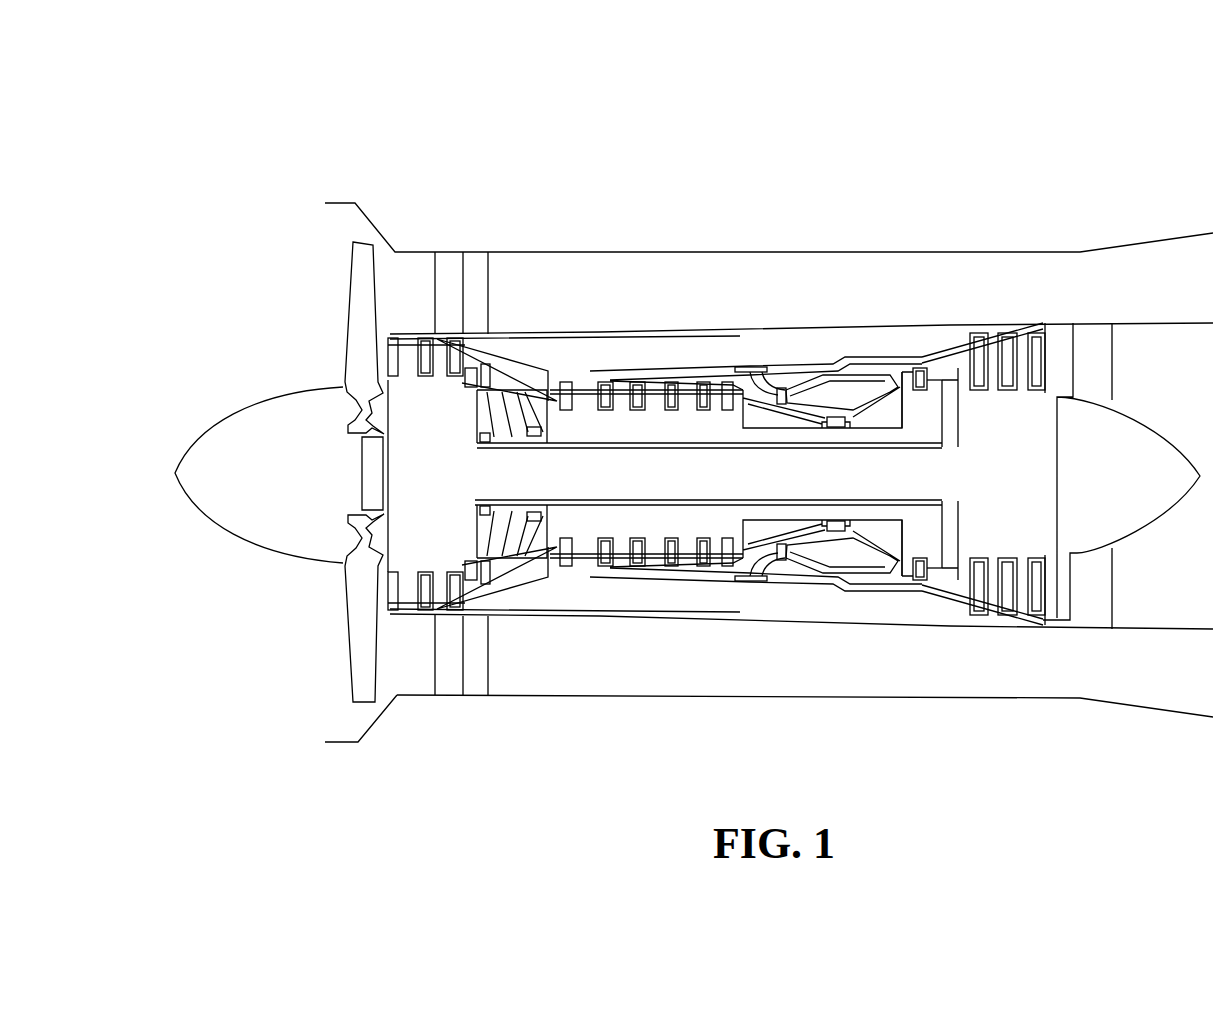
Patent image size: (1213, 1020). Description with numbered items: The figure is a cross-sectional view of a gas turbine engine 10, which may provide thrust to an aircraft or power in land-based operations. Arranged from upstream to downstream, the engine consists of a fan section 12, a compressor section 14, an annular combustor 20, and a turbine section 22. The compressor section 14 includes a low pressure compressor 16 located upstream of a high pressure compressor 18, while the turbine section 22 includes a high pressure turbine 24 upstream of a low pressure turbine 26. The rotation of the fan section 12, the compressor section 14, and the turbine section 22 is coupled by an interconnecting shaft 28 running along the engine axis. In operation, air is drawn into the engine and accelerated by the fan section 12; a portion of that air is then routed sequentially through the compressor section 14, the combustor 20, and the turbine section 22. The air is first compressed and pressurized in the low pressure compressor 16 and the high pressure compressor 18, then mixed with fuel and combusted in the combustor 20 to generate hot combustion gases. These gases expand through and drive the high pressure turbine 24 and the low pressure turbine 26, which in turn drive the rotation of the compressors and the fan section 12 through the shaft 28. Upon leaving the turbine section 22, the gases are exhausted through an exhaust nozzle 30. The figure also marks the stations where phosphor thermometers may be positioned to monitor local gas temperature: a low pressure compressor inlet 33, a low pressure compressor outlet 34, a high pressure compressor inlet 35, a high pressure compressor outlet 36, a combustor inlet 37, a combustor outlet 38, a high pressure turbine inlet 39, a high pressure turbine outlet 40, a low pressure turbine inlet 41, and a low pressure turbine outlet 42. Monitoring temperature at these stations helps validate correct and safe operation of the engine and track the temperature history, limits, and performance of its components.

The gas turbine engine 10 is at (927, 153).
The fan section 12 is at (365, 652).
The compressor section 14 is at (528, 350).
The low pressure compressor 16 is at (443, 603).
The high pressure compressor 18 is at (687, 552).
The annular combustor 20 is at (835, 393).
The turbine section 22 is at (999, 313).
The high pressure turbine 24 is at (935, 580).
The low pressure turbine 26 is at (1023, 607).
The interconnecting shaft 28 is at (577, 480).
The exhaust nozzle 30 is at (1153, 323).
The low pressure compressor inlet 33 is at (389, 697).
The low pressure compressor outlet 34 is at (547, 567).
The high pressure compressor inlet 35 is at (557, 570).
The high pressure compressor outlet 36 is at (733, 393).
The combustor inlet 37 is at (753, 570).
The combustor outlet 38 is at (892, 588).
The high pressure turbine inlet 39 is at (897, 380).
The high pressure turbine outlet 40 is at (938, 366).
The low pressure turbine inlet 41 is at (965, 588).
The low pressure turbine outlet 42 is at (1065, 595).